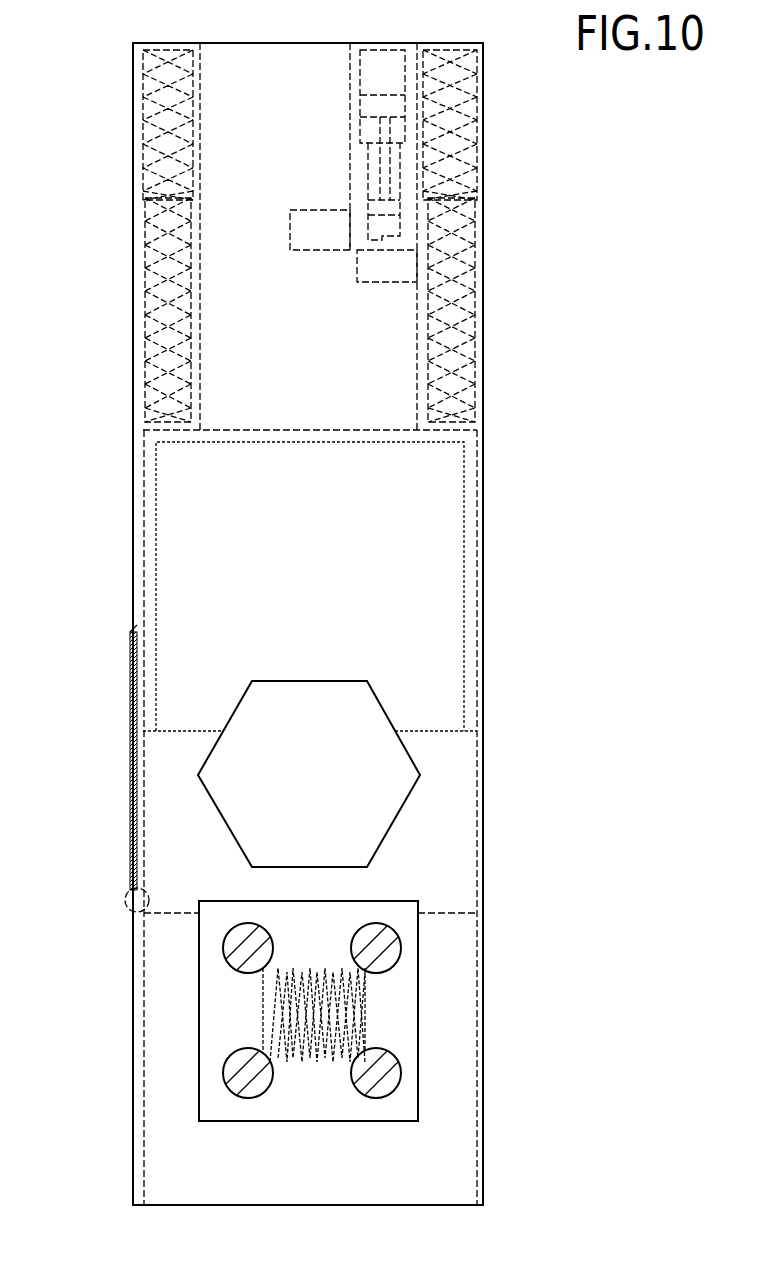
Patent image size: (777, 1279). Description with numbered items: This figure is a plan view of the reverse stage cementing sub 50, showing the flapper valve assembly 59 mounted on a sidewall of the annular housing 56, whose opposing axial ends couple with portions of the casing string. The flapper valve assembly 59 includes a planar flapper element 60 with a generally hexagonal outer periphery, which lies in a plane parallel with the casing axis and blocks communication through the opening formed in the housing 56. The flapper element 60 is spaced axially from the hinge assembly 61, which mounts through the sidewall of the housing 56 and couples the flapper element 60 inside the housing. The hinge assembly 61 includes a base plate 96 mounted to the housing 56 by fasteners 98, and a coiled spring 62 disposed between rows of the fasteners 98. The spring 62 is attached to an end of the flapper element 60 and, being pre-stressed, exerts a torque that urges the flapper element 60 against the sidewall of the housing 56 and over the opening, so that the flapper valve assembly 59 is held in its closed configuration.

The reverse stage cementing sub 50 is at (522, 520).
The annular housing 56 is at (452, 622).
The flapper valve assembly 59 is at (114, 664).
The flapper element 60 is at (320, 777).
The hinge assembly 61 is at (316, 1011).
The coiled spring 62 is at (263, 1000).
The base plate 96 is at (398, 1002).
The fasteners 98 is at (385, 1076).